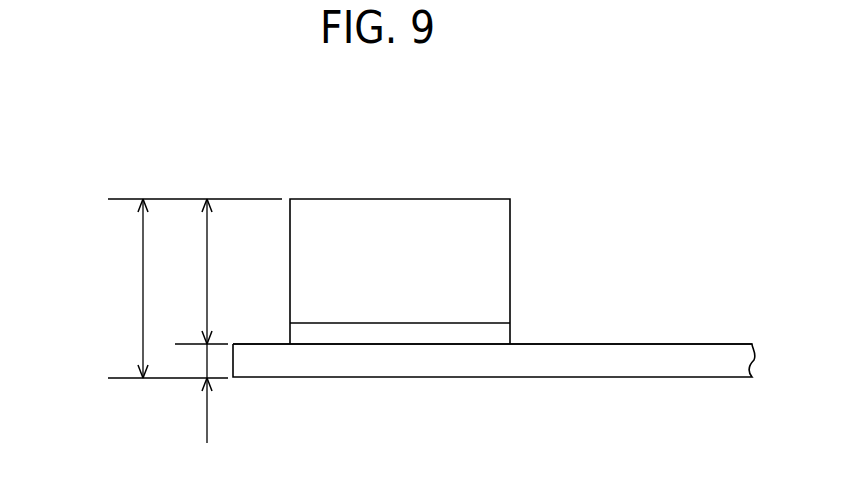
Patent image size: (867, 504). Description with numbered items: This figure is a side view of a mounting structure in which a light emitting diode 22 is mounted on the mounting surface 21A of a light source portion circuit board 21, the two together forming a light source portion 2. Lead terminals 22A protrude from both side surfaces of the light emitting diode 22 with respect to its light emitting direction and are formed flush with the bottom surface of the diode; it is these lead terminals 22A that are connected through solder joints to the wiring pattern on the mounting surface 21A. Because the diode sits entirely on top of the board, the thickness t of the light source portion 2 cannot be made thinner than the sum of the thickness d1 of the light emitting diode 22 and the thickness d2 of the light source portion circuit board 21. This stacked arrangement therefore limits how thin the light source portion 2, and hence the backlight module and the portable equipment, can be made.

The light source portion 2 is at (550, 175).
The light source portion circuit board 21 is at (608, 353).
The mounting surface 21A is at (647, 342).
The light emitting diode 22 is at (382, 218).
The lead terminal 22A is at (446, 335).
The thickness of the light source portion t is at (142, 287).
The thickness of the light emitting diode d1 is at (207, 286).
The thickness of the light source portion circuit board d2 is at (207, 354).